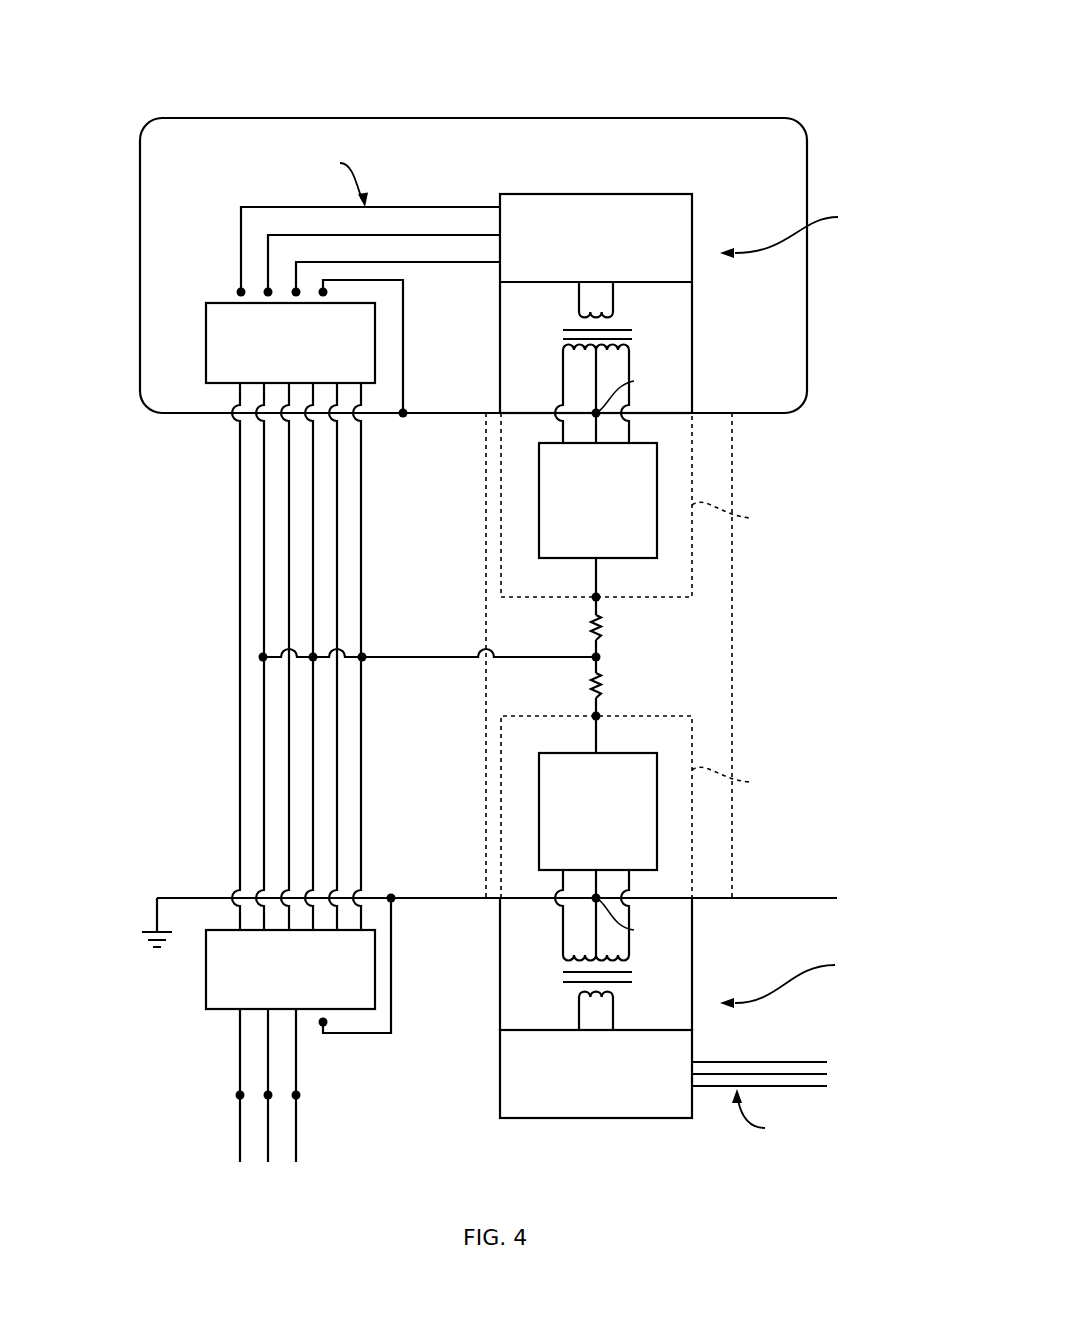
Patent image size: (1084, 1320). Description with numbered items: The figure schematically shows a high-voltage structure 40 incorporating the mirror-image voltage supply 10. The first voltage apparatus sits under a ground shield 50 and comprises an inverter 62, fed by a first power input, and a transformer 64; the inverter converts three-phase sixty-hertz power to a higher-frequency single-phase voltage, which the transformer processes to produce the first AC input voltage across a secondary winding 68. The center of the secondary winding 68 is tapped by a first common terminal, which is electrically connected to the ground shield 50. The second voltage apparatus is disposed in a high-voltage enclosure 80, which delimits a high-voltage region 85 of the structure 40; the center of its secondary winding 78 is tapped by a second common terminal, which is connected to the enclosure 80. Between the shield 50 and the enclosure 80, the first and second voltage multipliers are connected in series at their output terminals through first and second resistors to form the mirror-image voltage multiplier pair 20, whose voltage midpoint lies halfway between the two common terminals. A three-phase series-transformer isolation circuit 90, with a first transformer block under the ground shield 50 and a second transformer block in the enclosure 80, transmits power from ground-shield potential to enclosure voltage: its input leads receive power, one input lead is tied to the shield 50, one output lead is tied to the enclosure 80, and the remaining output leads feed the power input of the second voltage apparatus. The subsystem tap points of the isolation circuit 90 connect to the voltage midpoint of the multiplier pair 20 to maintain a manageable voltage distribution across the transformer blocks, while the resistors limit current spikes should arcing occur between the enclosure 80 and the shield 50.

The mirror-image voltage supply 10 is at (792, 560).
The mirror-image voltage multiplier pair 20 is at (732, 600).
The high-voltage structure 40 is at (698, 82).
The ground shield 50 is at (777, 898).
The inverter 62 is at (500, 1072).
The transformer 64 is at (500, 967).
The secondary winding 68 is at (630, 964).
The secondary winding 78 is at (630, 351).
The high-voltage enclosure 80 is at (807, 298).
The high-voltage region 85 is at (777, 160).
The series-transformer isolation circuit 90 is at (155, 593).